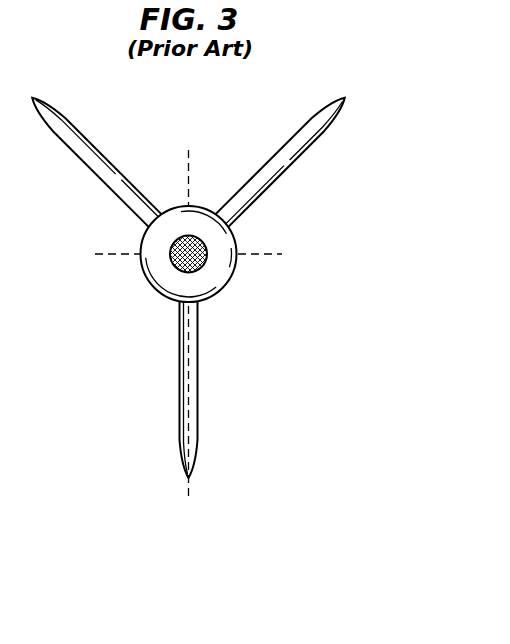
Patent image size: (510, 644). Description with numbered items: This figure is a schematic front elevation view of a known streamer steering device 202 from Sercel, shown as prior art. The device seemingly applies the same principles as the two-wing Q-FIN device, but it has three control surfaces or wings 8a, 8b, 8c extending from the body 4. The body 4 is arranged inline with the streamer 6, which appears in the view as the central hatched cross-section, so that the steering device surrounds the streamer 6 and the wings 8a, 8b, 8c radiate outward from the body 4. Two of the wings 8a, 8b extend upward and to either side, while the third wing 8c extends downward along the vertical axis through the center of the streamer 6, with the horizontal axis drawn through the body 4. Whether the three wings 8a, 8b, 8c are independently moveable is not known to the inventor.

The streamer steering device 202 is at (213, 315).
The body 4 is at (149, 284).
The streamer 6 is at (201, 266).
The wing 8a is at (92, 147).
The wing 8b is at (283, 147).
The wing 8c is at (179, 383).